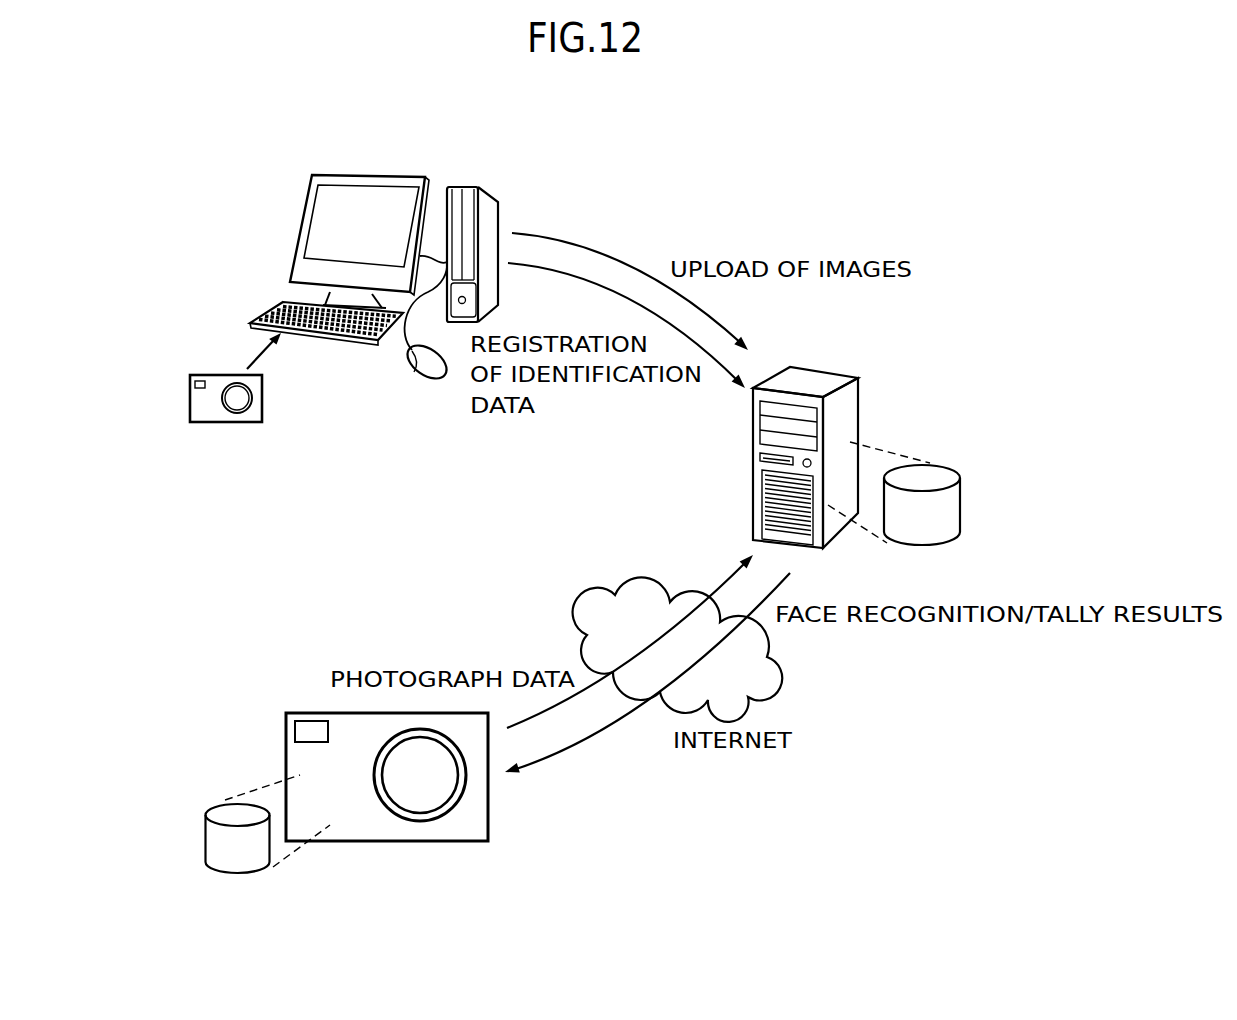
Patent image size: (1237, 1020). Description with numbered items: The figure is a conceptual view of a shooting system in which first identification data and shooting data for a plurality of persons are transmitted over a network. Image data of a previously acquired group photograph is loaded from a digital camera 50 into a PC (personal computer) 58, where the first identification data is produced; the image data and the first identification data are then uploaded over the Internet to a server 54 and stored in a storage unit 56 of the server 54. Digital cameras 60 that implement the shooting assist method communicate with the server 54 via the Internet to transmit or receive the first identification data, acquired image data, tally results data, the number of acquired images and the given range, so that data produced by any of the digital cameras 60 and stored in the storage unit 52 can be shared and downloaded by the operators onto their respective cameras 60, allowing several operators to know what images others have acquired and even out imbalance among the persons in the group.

The digital camera 50 is at (226, 424).
The storage unit 52 is at (205, 833).
The server 54 is at (827, 368).
The storage unit 56 is at (947, 468).
The PC (personal computer) 58 is at (486, 182).
The digital cameras 60 is at (382, 842).